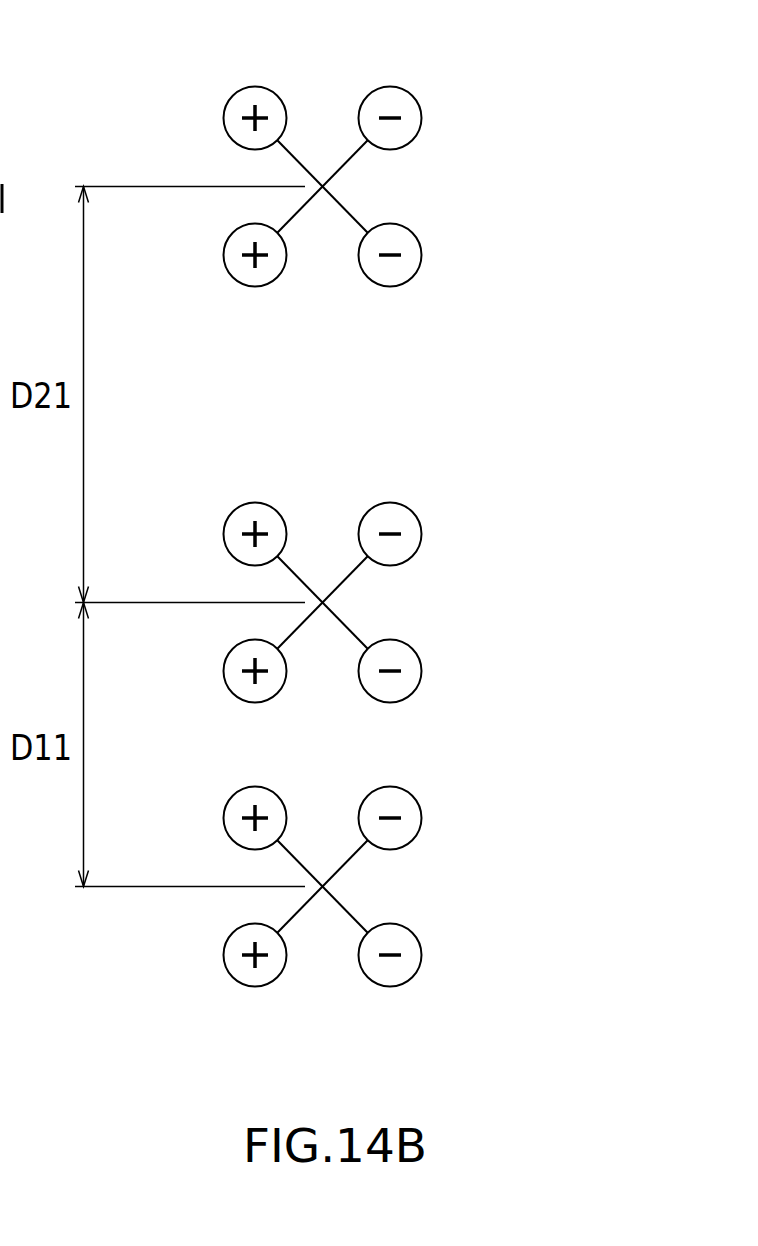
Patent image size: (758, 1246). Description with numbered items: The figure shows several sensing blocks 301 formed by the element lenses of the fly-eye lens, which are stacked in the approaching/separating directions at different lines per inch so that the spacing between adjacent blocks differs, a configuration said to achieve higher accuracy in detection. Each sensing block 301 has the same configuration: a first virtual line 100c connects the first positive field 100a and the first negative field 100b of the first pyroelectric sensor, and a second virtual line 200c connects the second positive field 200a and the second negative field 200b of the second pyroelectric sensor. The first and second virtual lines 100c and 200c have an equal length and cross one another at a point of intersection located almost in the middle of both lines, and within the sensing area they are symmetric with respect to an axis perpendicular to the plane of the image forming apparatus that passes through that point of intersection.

The first positive field 100a is at (255, 287).
The first negative field 100b is at (407, 89).
The first virtual line 100c is at (298, 213).
The second positive field 200a is at (257, 88).
The second negative field 200b is at (400, 284).
The second virtual line 200c is at (300, 157).
The sensing block 301 is at (333, 537).